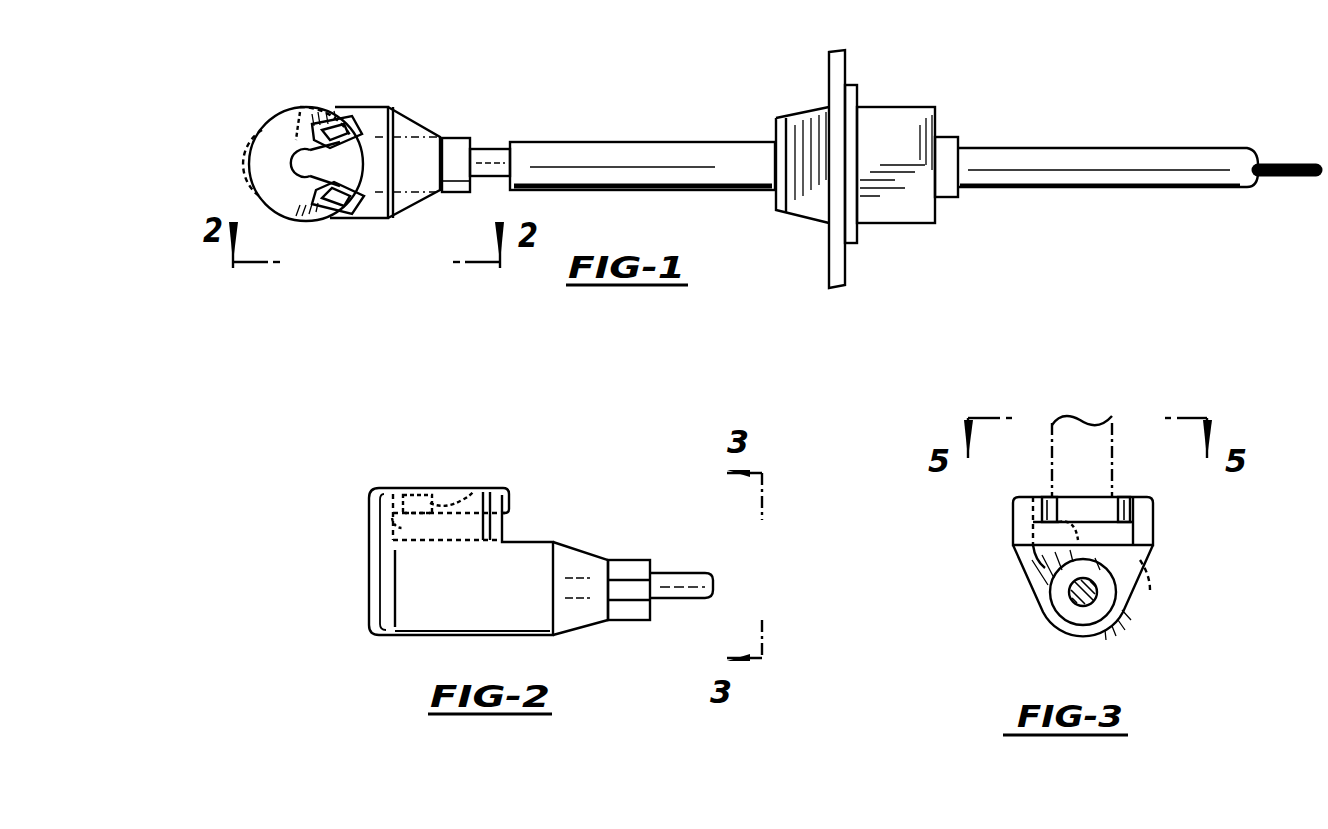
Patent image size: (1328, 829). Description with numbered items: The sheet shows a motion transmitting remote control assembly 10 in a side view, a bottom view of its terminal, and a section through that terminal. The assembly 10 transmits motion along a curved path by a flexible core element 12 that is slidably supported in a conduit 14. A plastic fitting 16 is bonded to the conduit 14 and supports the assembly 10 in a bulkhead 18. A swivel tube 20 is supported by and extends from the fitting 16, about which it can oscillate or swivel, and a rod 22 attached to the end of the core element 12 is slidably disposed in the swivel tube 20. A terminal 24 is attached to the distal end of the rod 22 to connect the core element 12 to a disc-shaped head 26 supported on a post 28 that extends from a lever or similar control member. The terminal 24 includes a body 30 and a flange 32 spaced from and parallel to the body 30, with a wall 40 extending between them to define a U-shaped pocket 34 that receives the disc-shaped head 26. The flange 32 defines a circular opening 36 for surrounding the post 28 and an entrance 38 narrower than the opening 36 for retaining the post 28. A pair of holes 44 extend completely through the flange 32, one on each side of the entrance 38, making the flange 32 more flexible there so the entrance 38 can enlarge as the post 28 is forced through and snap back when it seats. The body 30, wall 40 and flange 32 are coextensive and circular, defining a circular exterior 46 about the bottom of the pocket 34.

In FIG. 1, the motion transmitting remote control assembly 10 is at (1012, 126).
In FIG. 1, the core element 12 is at (1293, 162).
In FIG. 1, the conduit 14 is at (1178, 160).
In FIG. 1, the fitting 16 is at (914, 210).
In FIG. 1, the bulkhead 18 is at (848, 70).
In FIG. 1, the swivel tube 20 is at (638, 153).
In FIG. 1, the rod 22 is at (495, 155).
In FIG. 2, the rod 22 is at (688, 583).
In FIG. 3, the rod 22 is at (1068, 594).
In FIG. 1, the terminal 24 is at (266, 105).
In FIG. 2, the terminal 24 is at (392, 640).
In FIG. 3, the terminal 24 is at (1018, 580).
In FIG. 3, the disc-shaped head 26 is at (1046, 500).
In FIG. 3, the post 28 is at (1117, 422).
In FIG. 1, the body 30 is at (378, 118).
In FIG. 2, the body 30 is at (383, 577).
In FIG. 2, the flange 32 is at (511, 505).
In FIG. 3, the flange 32 is at (1075, 525).
In FIG. 1, the pocket 34 is at (300, 112).
In FIG. 2, the pocket 34 is at (382, 510).
In FIG. 3, the pocket 34 is at (1030, 552).
In FIG. 1, the circular opening 36 is at (294, 160).
In FIG. 2, the circular opening 36 is at (415, 497).
In FIG. 3, the circular opening 36 is at (1098, 505).
In FIG. 1, the entrance 38 is at (348, 190).
In FIG. 3, the wall 40 is at (1148, 535).
In FIG. 2, the hole 44 is at (476, 490).
In FIG. 1, the circular exterior 46 is at (270, 186).